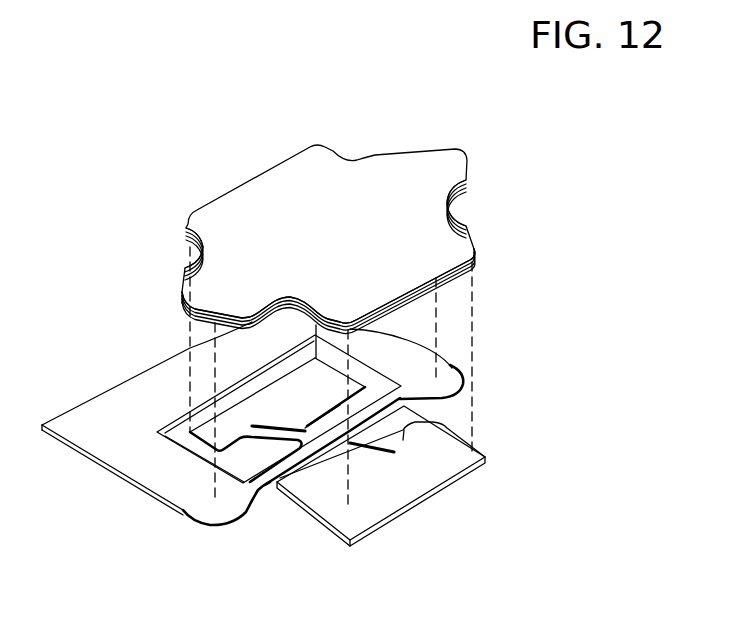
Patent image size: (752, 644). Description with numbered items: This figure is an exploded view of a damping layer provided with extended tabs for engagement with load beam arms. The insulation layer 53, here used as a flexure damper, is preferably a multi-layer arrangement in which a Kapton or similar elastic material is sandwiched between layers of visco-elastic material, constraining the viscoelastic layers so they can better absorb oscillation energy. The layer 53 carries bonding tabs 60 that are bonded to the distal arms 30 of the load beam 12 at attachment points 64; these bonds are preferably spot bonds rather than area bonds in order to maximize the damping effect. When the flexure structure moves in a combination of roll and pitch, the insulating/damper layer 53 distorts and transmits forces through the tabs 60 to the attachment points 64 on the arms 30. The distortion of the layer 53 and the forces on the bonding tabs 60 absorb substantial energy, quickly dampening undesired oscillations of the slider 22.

The load beam 12 is at (127, 407).
The slider 22 is at (432, 498).
The distal arms 30 is at (233, 504).
The insulation layer 53 is at (341, 313).
The bonding tabs 60 is at (187, 282).
The attachment points 64 is at (187, 325).